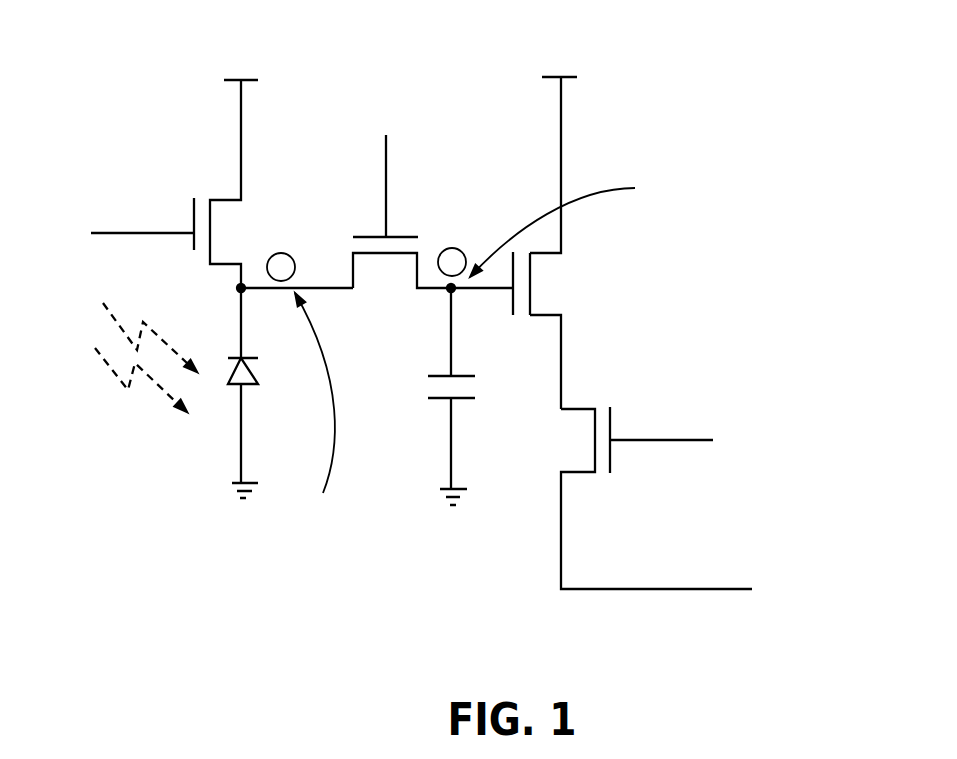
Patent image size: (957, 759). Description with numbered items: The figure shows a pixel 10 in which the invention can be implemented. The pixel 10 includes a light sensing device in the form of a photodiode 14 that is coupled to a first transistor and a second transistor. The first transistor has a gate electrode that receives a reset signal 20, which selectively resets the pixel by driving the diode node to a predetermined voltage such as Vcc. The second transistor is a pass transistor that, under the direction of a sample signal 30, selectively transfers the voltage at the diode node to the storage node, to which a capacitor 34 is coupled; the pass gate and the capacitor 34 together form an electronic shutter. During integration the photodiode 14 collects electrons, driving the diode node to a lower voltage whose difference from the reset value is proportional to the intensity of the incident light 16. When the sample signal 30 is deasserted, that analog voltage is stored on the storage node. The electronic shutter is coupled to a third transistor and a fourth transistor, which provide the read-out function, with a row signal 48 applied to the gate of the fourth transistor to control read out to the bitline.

The pixel 10 is at (75, 48).
The photodiode 14 is at (265, 393).
The incident light 16 is at (146, 365).
The reset signal 20 is at (101, 239).
The sample signal 30 is at (388, 141).
The capacitor 34 is at (468, 396).
The row signal 48 is at (740, 422).